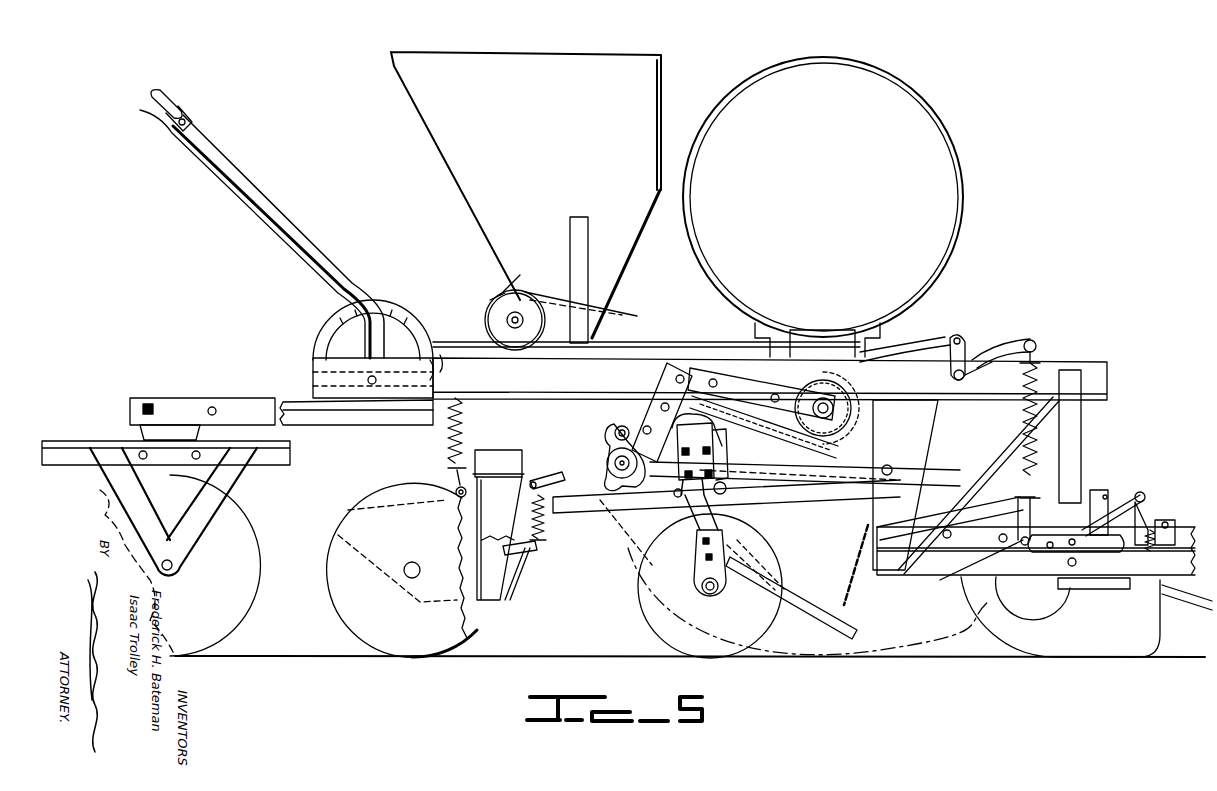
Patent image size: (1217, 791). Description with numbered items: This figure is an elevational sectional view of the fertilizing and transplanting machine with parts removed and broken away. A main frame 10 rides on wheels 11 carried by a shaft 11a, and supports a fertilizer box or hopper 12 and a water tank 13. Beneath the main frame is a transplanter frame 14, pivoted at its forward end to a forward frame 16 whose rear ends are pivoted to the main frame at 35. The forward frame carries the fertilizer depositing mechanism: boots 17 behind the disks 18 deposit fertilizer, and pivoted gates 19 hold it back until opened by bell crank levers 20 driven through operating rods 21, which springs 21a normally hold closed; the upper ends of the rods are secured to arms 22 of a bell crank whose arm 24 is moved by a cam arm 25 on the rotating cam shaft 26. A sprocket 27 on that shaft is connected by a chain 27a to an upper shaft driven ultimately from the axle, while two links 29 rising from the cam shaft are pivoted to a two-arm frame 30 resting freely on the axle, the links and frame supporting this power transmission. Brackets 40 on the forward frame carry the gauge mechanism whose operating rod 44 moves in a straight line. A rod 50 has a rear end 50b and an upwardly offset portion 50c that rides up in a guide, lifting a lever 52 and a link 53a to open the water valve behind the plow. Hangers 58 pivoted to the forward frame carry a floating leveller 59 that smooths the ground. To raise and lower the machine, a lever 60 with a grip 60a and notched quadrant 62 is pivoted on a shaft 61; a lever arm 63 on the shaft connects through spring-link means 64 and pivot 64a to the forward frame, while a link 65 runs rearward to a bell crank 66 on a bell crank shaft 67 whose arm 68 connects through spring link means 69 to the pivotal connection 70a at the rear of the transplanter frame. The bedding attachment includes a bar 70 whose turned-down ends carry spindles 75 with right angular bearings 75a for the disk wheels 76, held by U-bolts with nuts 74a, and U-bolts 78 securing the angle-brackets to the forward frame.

The main frame 10 is at (1098, 395).
The wheels 11 is at (640, 575).
The shaft 11a is at (840, 412).
The fertilizer box or hopper 12 is at (505, 223).
The tank 13 is at (710, 250).
The transplanter frame 14 is at (793, 536).
The forward frame 16 is at (815, 485).
The boots 17 is at (498, 590).
The disks 18 is at (345, 604).
The pivoted gates 19 is at (510, 565).
The bell crank levers 20 is at (537, 548).
The operating rods 21 is at (548, 522).
The springs 21a is at (548, 540).
The arms 22 is at (548, 478).
The arm 24 is at (626, 532).
The cam arm 25 is at (622, 460).
The cam shaft 26 is at (617, 462).
The sprocket 27 is at (1012, 626).
The chain 27a is at (634, 405).
The links 29 is at (680, 372).
The two-arm frame 30 is at (730, 382).
The pivot 35 is at (893, 468).
The brackets 40 is at (611, 457).
The operating rod 44 is at (985, 506).
The rod 50 is at (1048, 505).
The rear end 50b is at (1122, 480).
The upwardly offset portion 50c is at (1097, 490).
The lever 52 is at (1150, 498).
The link 53a is at (1152, 520).
The hangers 58 is at (726, 496).
The floating leveller 59 is at (803, 570).
The lever 60 is at (348, 272).
The grip 60a is at (190, 118).
The shaft 61 is at (368, 380).
The quadrant 62 is at (332, 335).
The lever arm 63 is at (456, 348).
The spring-link means 64 is at (450, 437).
The pivot 64a is at (456, 490).
The link 65 is at (438, 350).
The bell crank 66 is at (898, 350).
The bell crank shaft 67 is at (970, 356).
The arm 68 is at (1000, 344).
The spring link means 69 is at (1024, 406).
The bar 70 is at (716, 460).
The pivotal connection 70a is at (1000, 555).
The nuts 74a is at (727, 443).
The spindles 75 is at (695, 563).
The right angular bearings 75a is at (718, 593).
The disk wheels 76 is at (668, 620).
The U-bolts 78 is at (697, 427).